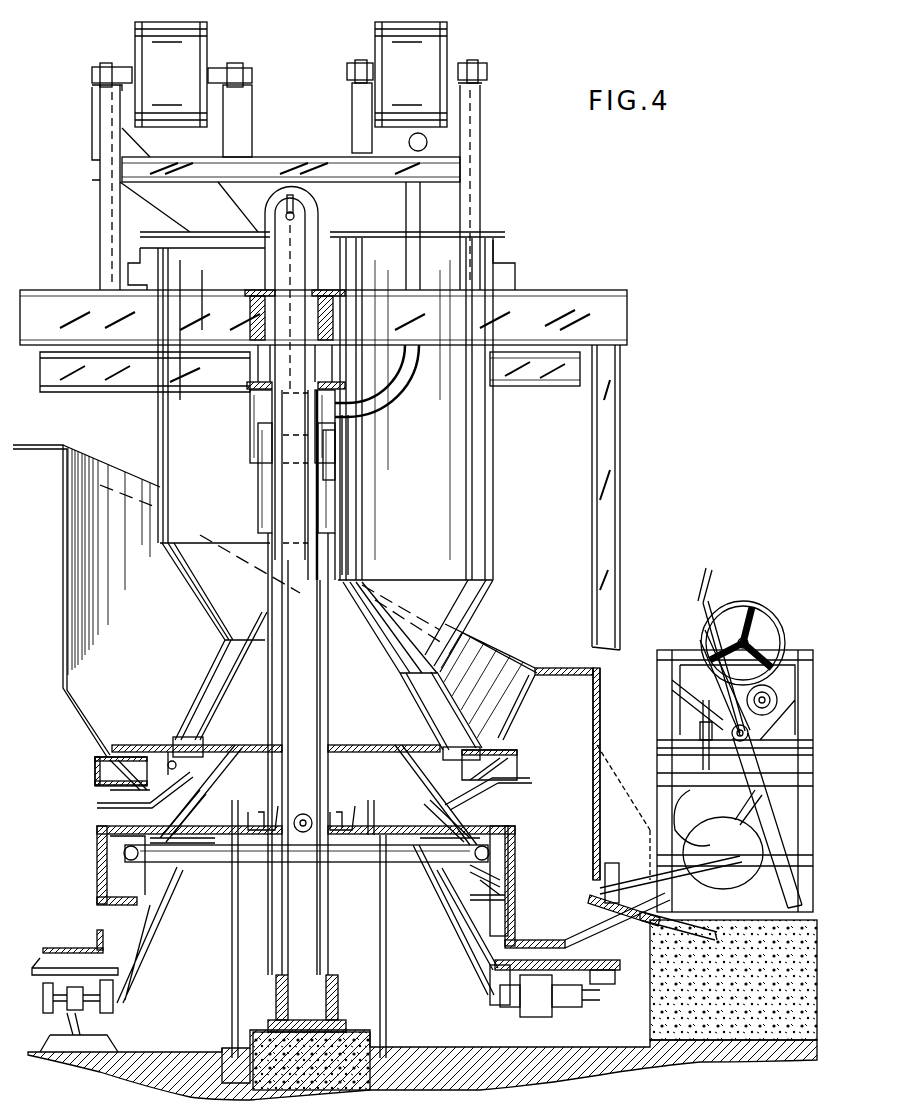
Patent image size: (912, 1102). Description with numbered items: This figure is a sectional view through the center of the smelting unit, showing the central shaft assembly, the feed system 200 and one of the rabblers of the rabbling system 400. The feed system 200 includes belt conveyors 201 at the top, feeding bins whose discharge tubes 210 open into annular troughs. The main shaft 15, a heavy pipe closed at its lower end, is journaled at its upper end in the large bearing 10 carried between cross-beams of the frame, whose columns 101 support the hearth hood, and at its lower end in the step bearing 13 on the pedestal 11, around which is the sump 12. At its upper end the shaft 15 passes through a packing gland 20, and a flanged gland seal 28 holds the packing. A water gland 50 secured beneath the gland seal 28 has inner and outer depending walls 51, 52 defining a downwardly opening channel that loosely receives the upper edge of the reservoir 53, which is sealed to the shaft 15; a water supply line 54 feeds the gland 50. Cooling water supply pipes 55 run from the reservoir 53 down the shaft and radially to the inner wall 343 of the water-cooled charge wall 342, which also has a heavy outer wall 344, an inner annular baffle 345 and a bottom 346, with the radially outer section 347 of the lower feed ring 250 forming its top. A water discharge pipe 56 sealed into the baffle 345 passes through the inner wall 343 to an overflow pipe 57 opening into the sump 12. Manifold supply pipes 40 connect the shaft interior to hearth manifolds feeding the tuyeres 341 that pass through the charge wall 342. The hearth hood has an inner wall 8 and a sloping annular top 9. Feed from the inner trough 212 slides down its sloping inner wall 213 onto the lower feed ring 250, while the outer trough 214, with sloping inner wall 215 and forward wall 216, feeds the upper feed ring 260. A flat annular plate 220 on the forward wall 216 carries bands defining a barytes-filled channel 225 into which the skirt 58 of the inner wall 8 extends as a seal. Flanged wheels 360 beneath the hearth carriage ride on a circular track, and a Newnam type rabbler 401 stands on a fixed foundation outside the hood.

The belt conveyors 201 is at (190, 50).
The feed system 200 is at (501, 74).
The bearing 10 is at (430, 343).
The columns 101 is at (608, 470).
The packing gland 20 is at (256, 352).
The flanged gland seal 28 is at (245, 387).
The water gland 50 is at (340, 400).
The water supply line 54 is at (400, 412).
The outer depending wall 52 is at (262, 465).
The reservoir 53 is at (265, 490).
The inner depending wall 51 is at (340, 455).
The sloping annular top 9 is at (95, 470).
The inner wall 8 is at (70, 568).
The discharge tubes 210 is at (215, 660).
The main shaft 15 is at (282, 708).
The step bearing 13 is at (335, 975).
The sump 12 is at (225, 1048).
The pedestal 11 is at (311, 1061).
The cooling water supply pipes 55 is at (320, 700).
The inner trough 212 is at (435, 758).
The outer trough 214 is at (172, 758).
The forward wall 216 is at (146, 758).
The channel 225 is at (95, 762).
The skirt 58 is at (95, 775).
The sloping inner wall 215 is at (205, 790).
The sloping inner wall 213 is at (400, 795).
The flat annular plate 220 is at (517, 765).
The upper feed ring 260 is at (100, 805).
The lower feed ring 250 is at (100, 832).
The water discharge pipe 56 is at (168, 835).
The manifold supply pipes 40 is at (210, 862).
The radially outer section 347 is at (505, 830).
The water-cooled charge wall 342 is at (530, 858).
The inner wall 343 is at (470, 872).
The outer wall 344 is at (505, 887).
The inner annular baffle 345 is at (512, 895).
The tuyeres 341 is at (150, 898).
The bottom 346 is at (480, 910).
The overflow pipe 57 is at (232, 920).
The flanged wheel 360 is at (83, 1018).
The rabbling system 400 is at (771, 595).
The Newnam type rabblers 401 is at (643, 728).